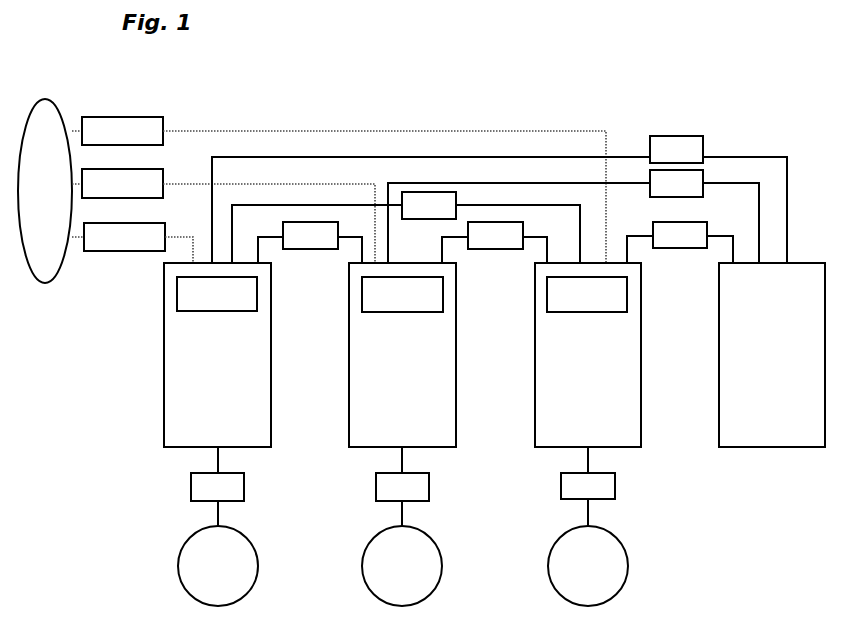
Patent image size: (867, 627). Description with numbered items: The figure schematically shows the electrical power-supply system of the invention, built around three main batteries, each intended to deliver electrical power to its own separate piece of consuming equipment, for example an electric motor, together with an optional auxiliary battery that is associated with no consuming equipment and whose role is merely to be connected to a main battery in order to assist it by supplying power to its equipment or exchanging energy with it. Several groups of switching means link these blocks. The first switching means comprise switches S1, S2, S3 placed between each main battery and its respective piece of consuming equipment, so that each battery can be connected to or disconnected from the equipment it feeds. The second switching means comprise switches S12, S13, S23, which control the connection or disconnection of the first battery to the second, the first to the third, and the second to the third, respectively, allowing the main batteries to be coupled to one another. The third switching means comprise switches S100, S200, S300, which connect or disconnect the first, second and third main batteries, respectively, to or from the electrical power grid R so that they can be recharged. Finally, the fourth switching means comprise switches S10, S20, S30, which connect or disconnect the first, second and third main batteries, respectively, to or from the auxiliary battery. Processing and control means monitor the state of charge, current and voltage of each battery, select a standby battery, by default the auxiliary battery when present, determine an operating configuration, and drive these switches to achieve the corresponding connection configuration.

The electrical power grid R is at (51, 191).
The switches S300 is at (344, 190).
The switches S200 is at (228, 216).
The switches S100 is at (138, 243).
The switches S10 is at (499, 199).
The switches S20 is at (573, 216).
The switches S30 is at (680, 242).
The switches S12 is at (310, 242).
The switches S13 is at (406, 227).
The switches S23 is at (494, 242).
The switches S1 is at (217, 486).
The switches S2 is at (402, 486).
The switches S3 is at (588, 486).